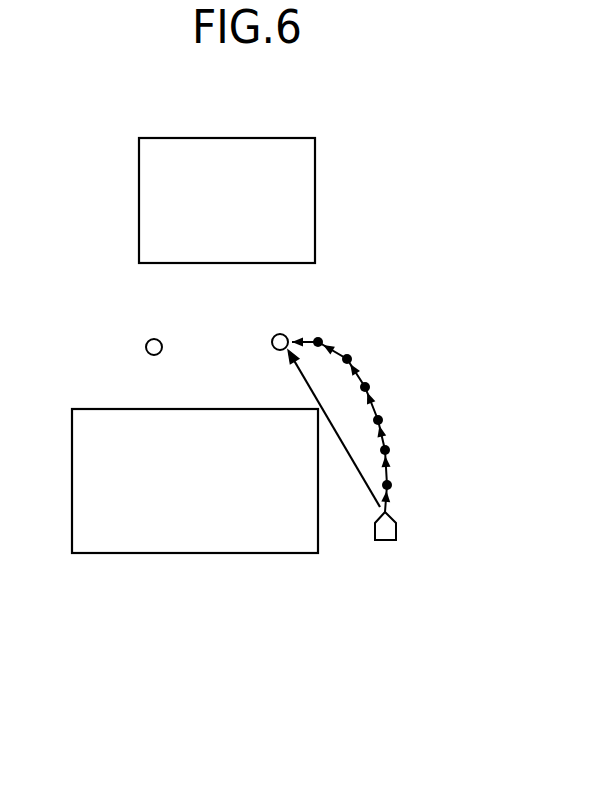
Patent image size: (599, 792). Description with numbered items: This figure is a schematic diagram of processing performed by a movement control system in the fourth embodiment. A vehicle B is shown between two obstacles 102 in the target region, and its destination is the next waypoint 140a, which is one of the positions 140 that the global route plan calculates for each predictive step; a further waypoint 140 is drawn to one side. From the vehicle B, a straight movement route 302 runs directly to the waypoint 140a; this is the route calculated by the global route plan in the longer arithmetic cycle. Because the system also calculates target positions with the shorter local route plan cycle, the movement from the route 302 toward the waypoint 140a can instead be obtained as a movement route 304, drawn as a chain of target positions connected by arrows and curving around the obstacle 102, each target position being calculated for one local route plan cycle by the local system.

The obstacle 102 is at (260, 138).
The position 140 is at (146, 347).
The selected target location 140a is at (282, 333).
The movement route 302 is at (357, 470).
The movement route 304 is at (363, 377).
The vehicle B is at (397, 527).